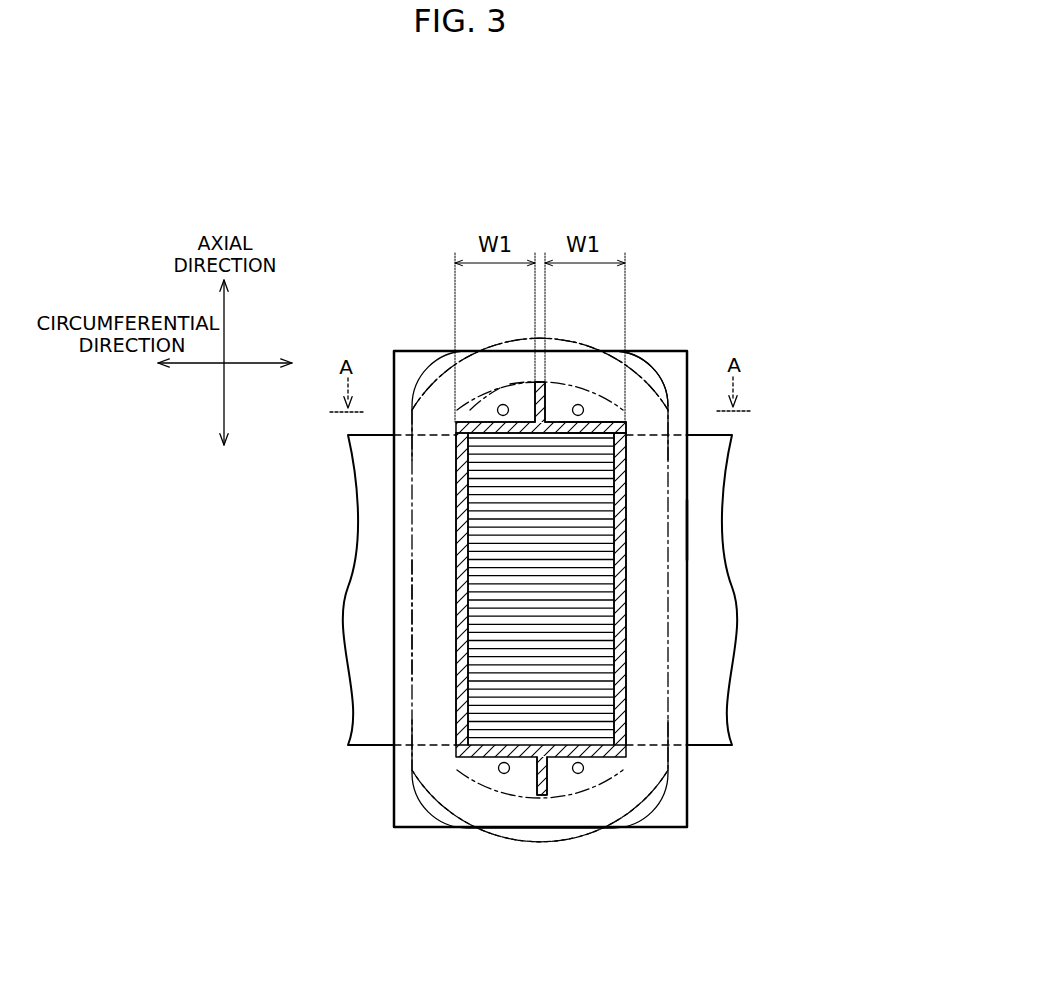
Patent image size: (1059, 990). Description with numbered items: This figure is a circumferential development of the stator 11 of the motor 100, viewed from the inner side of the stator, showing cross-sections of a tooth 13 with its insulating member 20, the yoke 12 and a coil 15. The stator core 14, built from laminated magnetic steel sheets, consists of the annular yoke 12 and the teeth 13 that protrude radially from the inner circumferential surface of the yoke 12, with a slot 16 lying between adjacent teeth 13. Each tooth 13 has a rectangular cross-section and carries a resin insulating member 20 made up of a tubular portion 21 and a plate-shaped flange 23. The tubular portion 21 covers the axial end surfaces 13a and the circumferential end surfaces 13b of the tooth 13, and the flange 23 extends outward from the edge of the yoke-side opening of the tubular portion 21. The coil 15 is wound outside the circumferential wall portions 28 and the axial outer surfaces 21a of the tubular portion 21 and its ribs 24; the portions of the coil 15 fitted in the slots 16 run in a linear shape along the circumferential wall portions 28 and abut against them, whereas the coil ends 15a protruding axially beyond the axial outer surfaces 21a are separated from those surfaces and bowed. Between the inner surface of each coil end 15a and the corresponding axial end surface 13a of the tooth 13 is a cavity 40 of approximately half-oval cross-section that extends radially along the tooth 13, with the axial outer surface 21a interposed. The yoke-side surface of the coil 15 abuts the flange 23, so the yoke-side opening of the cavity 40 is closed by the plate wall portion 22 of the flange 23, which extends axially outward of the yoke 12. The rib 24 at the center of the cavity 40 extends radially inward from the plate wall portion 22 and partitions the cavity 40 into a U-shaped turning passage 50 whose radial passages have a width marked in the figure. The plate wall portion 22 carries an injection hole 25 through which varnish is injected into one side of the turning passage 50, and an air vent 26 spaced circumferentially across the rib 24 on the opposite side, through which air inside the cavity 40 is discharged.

The motor 100 is at (823, 128).
The stator 11 is at (718, 202).
The yoke 12 is at (733, 464).
The tooth 13 is at (510, 680).
The axial end surface 13a is at (458, 422).
The circumferential end surface 13b is at (457, 465).
The stator core 14 is at (769, 431).
The coil 15 is at (672, 710).
The coil end 15a is at (667, 351).
The slot 16 is at (432, 617).
The insulating member 20 is at (691, 573).
The tubular portion 21 is at (630, 656).
The axial outer surface 21a is at (594, 420).
The plate wall portion 22 is at (662, 388).
The flange 23 is at (689, 530).
The rib 24 is at (570, 382).
The injection hole 25 is at (482, 411).
The air vent 26 is at (579, 404).
The circumferential wall portion 28 is at (377, 557).
The cavity 40 is at (503, 404).
The turning passage 50 is at (521, 408).